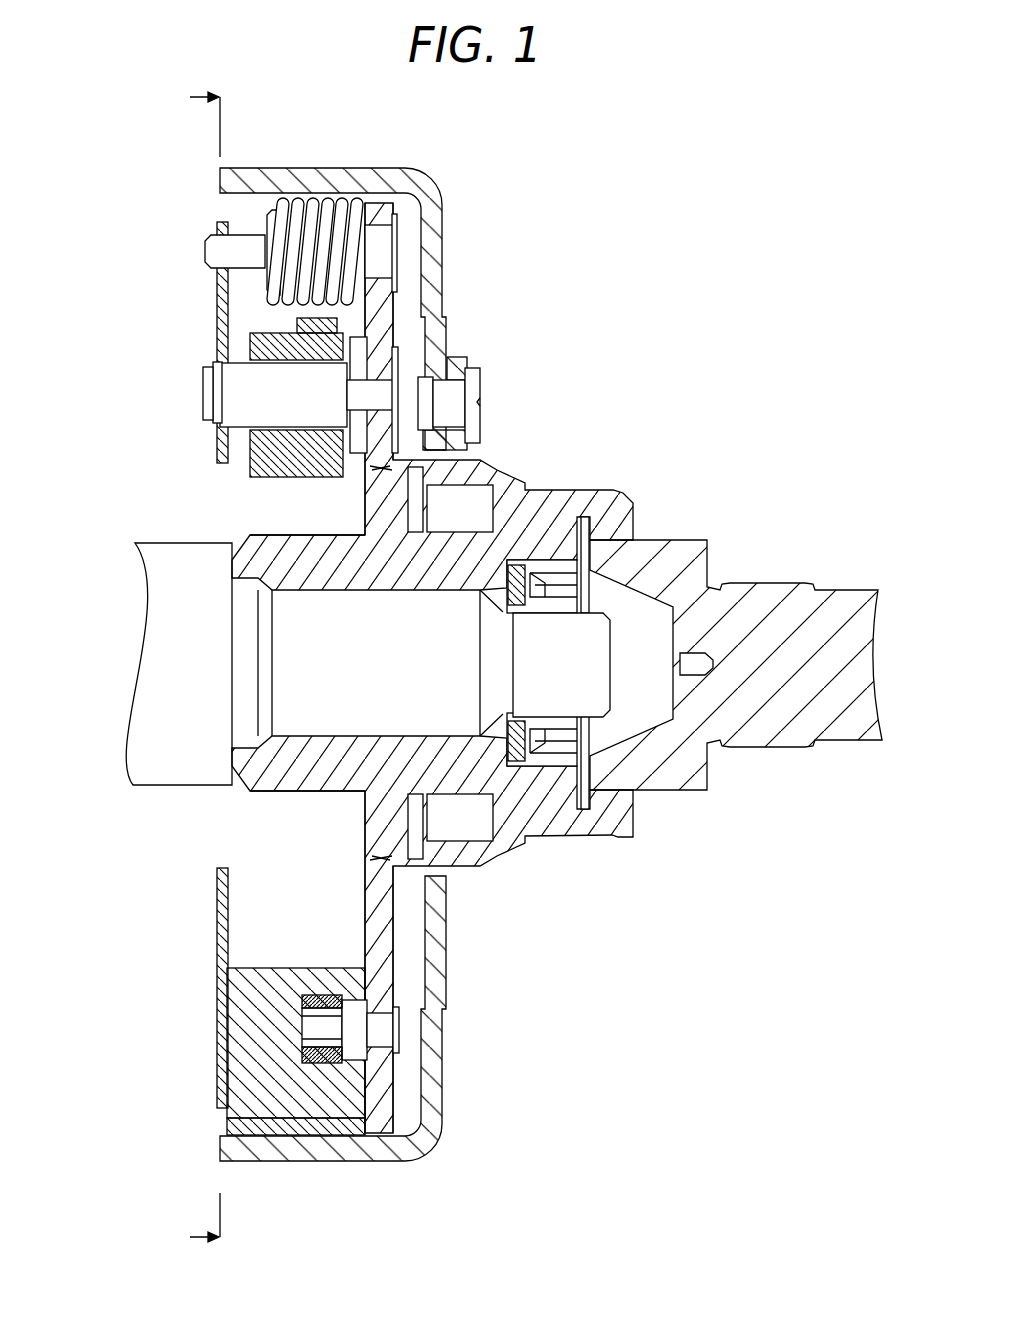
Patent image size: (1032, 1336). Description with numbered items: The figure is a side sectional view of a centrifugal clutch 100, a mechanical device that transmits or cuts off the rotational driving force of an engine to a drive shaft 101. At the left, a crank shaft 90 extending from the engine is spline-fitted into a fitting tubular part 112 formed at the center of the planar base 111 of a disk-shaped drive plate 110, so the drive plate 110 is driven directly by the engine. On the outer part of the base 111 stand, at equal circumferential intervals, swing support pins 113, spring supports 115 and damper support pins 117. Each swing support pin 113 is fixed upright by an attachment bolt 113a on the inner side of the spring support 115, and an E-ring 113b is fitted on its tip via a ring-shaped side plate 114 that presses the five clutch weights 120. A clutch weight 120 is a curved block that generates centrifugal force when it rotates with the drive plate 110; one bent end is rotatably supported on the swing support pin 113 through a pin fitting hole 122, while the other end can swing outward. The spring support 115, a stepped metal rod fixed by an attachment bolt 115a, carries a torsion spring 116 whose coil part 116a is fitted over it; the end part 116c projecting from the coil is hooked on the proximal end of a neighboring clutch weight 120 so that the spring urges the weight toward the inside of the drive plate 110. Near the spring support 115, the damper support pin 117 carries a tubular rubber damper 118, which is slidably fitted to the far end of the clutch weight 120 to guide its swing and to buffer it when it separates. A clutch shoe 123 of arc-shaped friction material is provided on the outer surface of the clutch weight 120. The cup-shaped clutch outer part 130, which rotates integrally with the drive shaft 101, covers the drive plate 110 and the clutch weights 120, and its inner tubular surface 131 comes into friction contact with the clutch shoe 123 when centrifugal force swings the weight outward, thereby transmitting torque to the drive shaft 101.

The centrifugal clutch 100 is at (480, 664).
The crank shaft 90 is at (160, 665).
The drive shaft 101 is at (873, 660).
The drive plate 110 is at (410, 668).
The base 111 is at (366, 891).
The fitting tubular part 112 is at (279, 798).
The swing support pin 113 is at (262, 351).
The attachment bolt 113a is at (400, 357).
The E-ring 113b is at (217, 437).
The side plate 114 is at (217, 283).
The spring support 115 is at (212, 221).
The attachment bolt 115a is at (405, 222).
The torsion spring 116 is at (180, 383).
The coil part 116a is at (262, 316).
The end part 116c is at (262, 322).
The damper support pin 117 is at (400, 1030).
The damper 118 is at (320, 997).
The clutch weight 120 is at (249, 963).
The pin fitting hole 122 is at (262, 422).
The clutch shoe 123 is at (227, 1128).
The clutch outer part 130 is at (320, 168).
The tubular surface 131 is at (380, 1131).